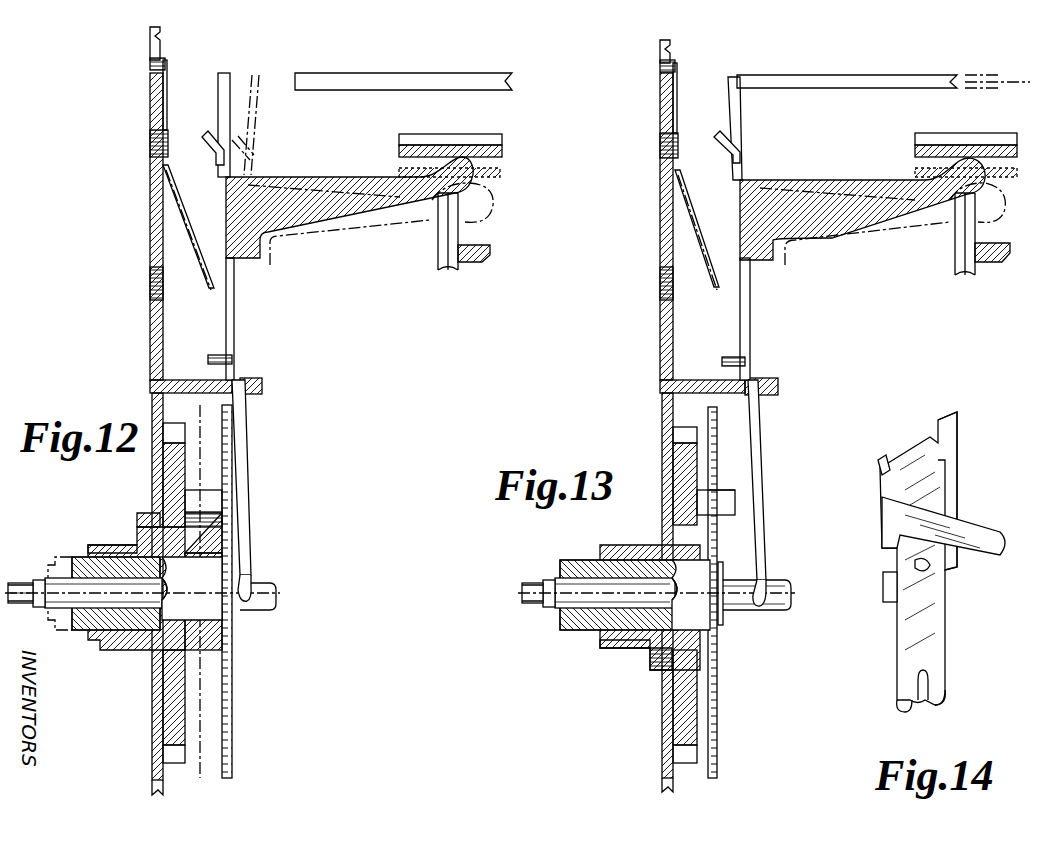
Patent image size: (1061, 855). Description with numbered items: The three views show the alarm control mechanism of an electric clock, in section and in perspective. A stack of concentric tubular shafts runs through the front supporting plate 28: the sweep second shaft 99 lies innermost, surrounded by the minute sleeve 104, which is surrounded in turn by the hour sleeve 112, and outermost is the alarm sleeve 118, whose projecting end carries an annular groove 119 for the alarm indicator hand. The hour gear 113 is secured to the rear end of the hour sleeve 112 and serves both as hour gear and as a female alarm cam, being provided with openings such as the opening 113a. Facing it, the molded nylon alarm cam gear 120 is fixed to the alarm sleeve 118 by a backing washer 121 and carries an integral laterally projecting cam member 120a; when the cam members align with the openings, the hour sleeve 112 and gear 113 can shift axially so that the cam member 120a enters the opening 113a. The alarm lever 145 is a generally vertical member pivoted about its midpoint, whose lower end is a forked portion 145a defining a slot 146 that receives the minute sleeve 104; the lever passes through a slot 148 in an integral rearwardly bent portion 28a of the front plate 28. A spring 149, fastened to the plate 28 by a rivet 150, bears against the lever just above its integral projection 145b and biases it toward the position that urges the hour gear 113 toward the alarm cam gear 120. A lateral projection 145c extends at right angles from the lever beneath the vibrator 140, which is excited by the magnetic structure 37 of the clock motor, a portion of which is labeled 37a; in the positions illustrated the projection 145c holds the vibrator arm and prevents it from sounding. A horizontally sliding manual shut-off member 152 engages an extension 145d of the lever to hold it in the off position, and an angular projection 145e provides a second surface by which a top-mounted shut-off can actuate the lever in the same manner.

In FIG. 12, the front plate 28 is at (150, 42).
In FIG. 13, the front plate 28 is at (660, 218).
In FIG. 12, the integral bent portion 28a is at (185, 380).
In FIG. 13, the integral bent portion 28a is at (700, 380).
In FIG. 12, the magnetic structure 37 is at (468, 266).
In FIG. 13, the magnetic structure 37 is at (978, 258).
In FIG. 12, the bracket arm (phantom) 37a is at (452, 230).
In FIG. 13, the bracket arm (phantom) 37a is at (965, 228).
In FIG. 12, the sweep second shaft 99 is at (16, 590).
In FIG. 13, the sweep second shaft 99 is at (527, 605).
In FIG. 12, the minute sleeve 104 is at (40, 580).
In FIG. 13, the minute sleeve 104 is at (548, 583).
In FIG. 12, the hour sleeve 112 is at (82, 567).
In FIG. 13, the hour sleeve 112 is at (582, 632).
In FIG. 12, the hour gear 113 is at (236, 428).
In FIG. 13, the hour gear 113 is at (718, 450).
In FIG. 13, the opening 113a is at (712, 490).
In FIG. 12, the alarm sleeve 118 is at (105, 642).
In FIG. 13, the alarm sleeve 118 is at (635, 548).
In FIG. 12, the annular groove 119 is at (96, 546).
In FIG. 13, the annular groove 119 is at (610, 648).
In FIG. 12, the alarm cam gear 120 is at (205, 594).
In FIG. 13, the alarm cam gear 120 is at (714, 592).
In FIG. 12, the cam member 120a is at (216, 495).
In FIG. 13, the cam member 120a is at (728, 510).
In FIG. 12, the backing washer 121 is at (150, 518).
In FIG. 13, the backing washer 121 is at (662, 672).
In FIG. 12, the vibrator 140 is at (500, 148).
In FIG. 13, the vibrator 140 is at (1016, 150).
In FIG. 12, the alarm lever 145 is at (322, 318).
In FIG. 13, the alarm lever 145 is at (835, 340).
In FIG. 14, the alarm lever 145 is at (928, 561).
In FIG. 12, the forked portion 145a is at (255, 596).
In FIG. 13, the forked portion 145a is at (753, 610).
In FIG. 14, the forked portion 145a is at (930, 706).
In FIG. 12, the integral projection 145b is at (208, 359).
In FIG. 13, the integral projection 145b is at (725, 357).
In FIG. 14, the integral projection 145b is at (918, 565).
In FIG. 12, the lateral projection 145c is at (360, 180).
In FIG. 13, the lateral projection 145c is at (837, 190).
In FIG. 14, the lateral projection 145c is at (962, 527).
In FIG. 12, the extension 145d is at (228, 78).
In FIG. 13, the extension 145d is at (727, 78).
In FIG. 14, the extension 145d is at (958, 420).
In FIG. 12, the angular projection 145e is at (208, 133).
In FIG. 13, the angular projection 145e is at (727, 137).
In FIG. 14, the angular projection 145e is at (880, 458).
In FIG. 14, the slot 146 is at (926, 680).
In FIG. 12, the slot 148 is at (246, 378).
In FIG. 13, the slot 148 is at (758, 400).
In FIG. 12, the spring 149 is at (203, 183).
In FIG. 13, the spring 149 is at (705, 195).
In FIG. 12, the rivet 150 is at (168, 130).
In FIG. 13, the rivet 150 is at (680, 130).
In FIG. 12, the shut-off member 152 is at (457, 78).
In FIG. 13, the shut-off member 152 is at (933, 62).